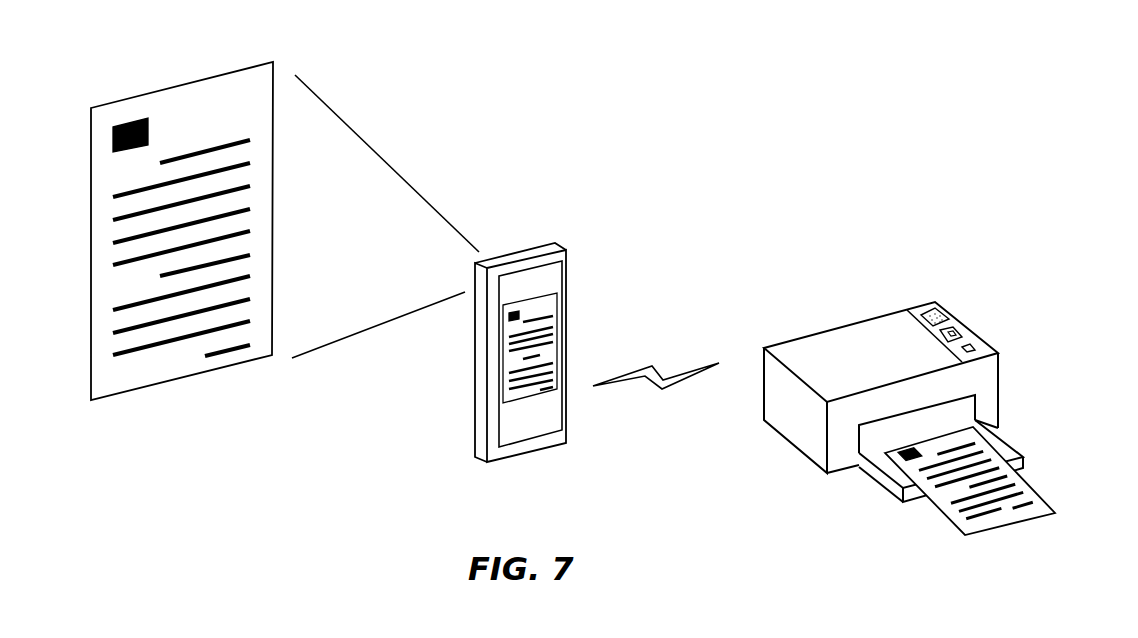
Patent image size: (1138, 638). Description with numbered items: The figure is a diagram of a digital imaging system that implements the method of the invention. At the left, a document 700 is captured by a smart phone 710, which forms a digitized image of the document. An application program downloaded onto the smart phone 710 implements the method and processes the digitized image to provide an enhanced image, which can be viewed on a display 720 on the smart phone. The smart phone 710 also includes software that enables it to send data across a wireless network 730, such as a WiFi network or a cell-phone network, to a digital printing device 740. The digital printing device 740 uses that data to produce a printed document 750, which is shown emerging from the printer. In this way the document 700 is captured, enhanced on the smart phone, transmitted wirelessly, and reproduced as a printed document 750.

The document 700 is at (182, 83).
The smart phone 710 is at (533, 248).
The display 720 is at (553, 279).
The wireless network 730 is at (692, 368).
The digital printing device 740 is at (837, 325).
The printed document 750 is at (1045, 498).